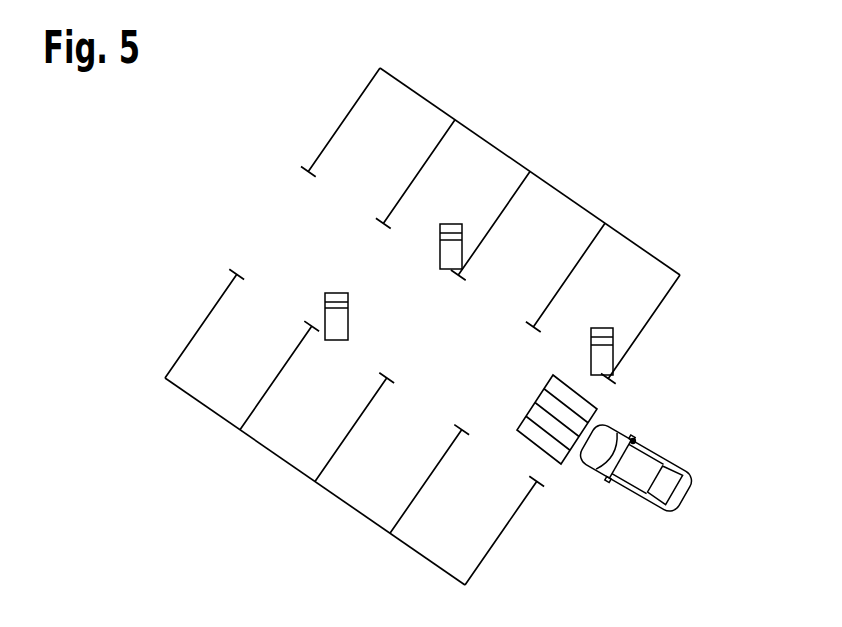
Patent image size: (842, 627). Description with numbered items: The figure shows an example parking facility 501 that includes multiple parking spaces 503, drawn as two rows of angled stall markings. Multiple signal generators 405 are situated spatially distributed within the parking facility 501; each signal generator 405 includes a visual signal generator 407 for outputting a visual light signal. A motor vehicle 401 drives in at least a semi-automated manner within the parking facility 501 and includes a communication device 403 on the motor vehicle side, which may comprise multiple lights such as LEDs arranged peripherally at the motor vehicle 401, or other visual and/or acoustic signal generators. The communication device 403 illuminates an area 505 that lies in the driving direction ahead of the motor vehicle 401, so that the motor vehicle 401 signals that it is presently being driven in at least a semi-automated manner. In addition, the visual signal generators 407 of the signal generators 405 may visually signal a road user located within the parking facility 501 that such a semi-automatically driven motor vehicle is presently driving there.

The motor vehicle 401 is at (680, 463).
The communication device on the motor vehicle side 403 is at (652, 455).
The signal generator 405 is at (596, 330).
The visual signal generator 407 is at (327, 307).
The parking facility 501 is at (237, 175).
The parking spaces 503 is at (502, 183).
The area 505 is at (568, 461).